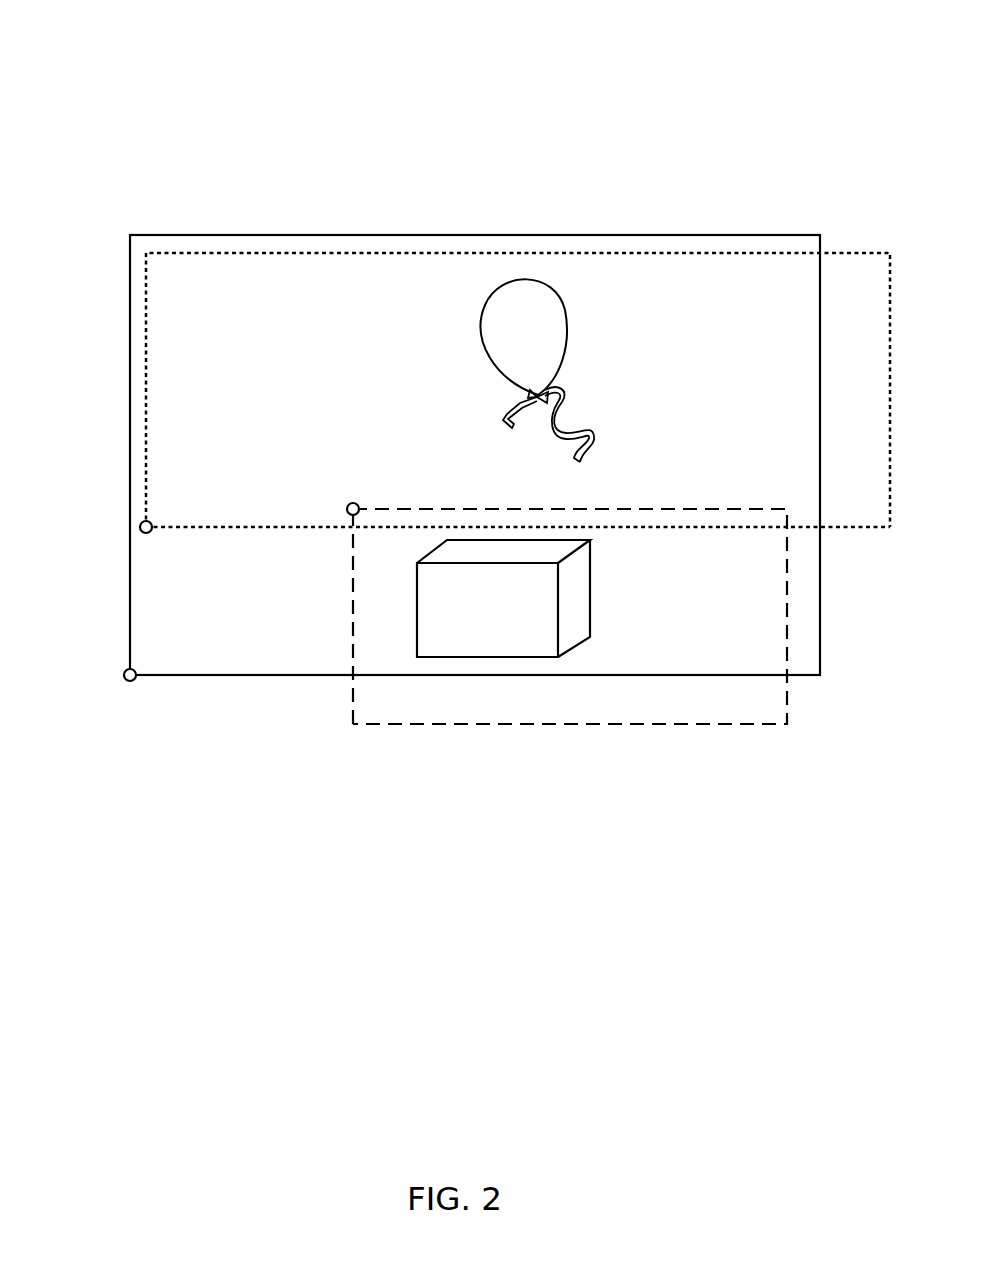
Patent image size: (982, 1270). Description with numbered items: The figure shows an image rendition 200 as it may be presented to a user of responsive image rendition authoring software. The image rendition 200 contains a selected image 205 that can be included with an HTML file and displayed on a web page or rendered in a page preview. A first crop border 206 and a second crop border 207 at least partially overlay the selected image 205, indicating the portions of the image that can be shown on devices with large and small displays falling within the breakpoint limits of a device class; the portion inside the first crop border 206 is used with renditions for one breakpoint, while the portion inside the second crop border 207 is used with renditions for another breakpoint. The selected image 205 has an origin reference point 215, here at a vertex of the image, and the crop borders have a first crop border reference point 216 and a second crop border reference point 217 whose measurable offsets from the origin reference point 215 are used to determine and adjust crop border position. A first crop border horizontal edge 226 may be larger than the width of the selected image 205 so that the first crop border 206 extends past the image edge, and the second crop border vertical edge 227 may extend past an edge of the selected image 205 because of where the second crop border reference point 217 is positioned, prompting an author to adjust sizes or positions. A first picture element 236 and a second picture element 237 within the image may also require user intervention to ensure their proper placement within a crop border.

The image rendition 200 is at (166, 88).
The selected image 205 is at (202, 644).
The first crop border 206 is at (881, 378).
The second crop border 207 is at (569, 739).
The origin reference point 215 is at (129, 697).
The first crop border reference point 216 is at (143, 548).
The second crop border reference point 217 is at (358, 488).
The first crop border horizontal edge 226 is at (233, 514).
The second crop border vertical edge 227 is at (339, 613).
The first picture element 236 is at (574, 311).
The second picture element 237 is at (604, 589).